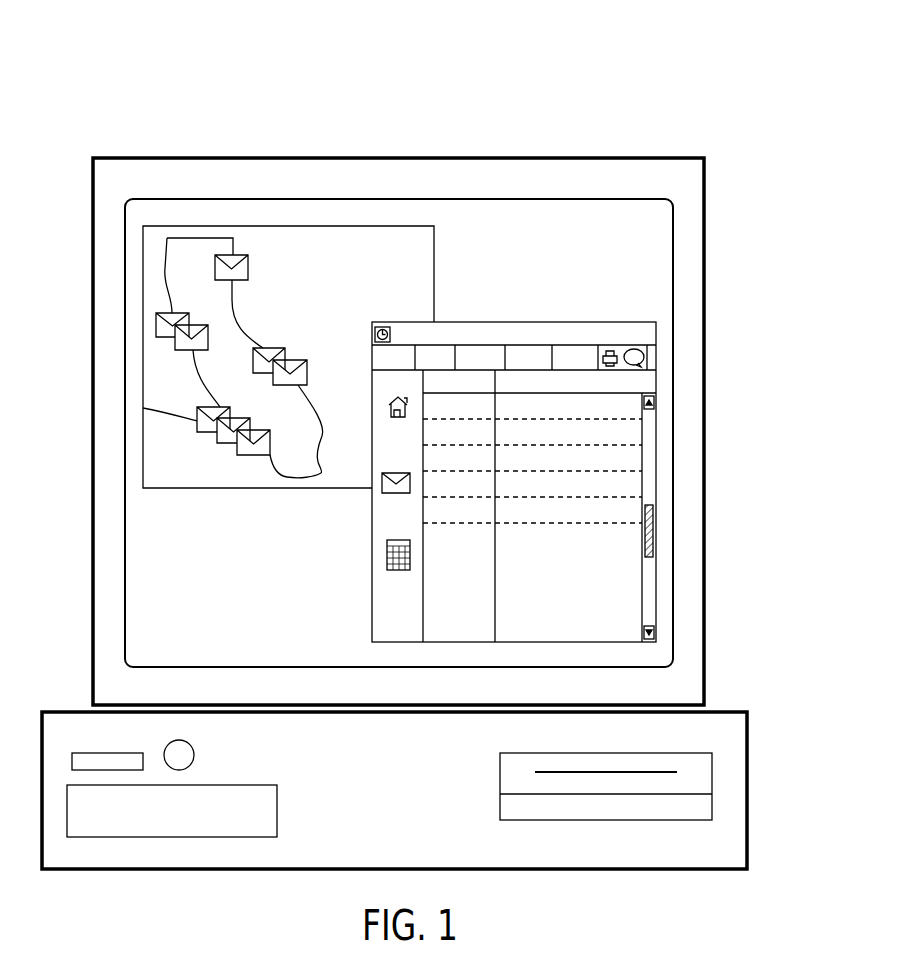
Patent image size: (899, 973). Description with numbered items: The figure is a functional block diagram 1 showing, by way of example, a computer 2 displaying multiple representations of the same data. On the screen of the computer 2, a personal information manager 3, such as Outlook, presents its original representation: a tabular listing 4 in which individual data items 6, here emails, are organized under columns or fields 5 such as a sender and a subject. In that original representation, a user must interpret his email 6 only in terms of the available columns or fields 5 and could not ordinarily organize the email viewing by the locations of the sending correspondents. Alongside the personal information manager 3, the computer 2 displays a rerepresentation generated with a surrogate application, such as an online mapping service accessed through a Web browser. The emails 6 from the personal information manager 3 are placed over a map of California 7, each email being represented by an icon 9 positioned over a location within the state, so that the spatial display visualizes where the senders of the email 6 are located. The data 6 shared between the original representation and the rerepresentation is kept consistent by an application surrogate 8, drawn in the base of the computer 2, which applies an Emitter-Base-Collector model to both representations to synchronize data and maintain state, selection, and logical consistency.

The functional block diagram 1 is at (105, 74).
The computer 2 is at (243, 139).
The personal information manager 3 is at (584, 322).
The tabular listings 4 is at (683, 385).
The columns or fields 5 is at (658, 383).
The individual data items 6 is at (626, 434).
The map of California 7 is at (294, 226).
The application surrogate 8 is at (147, 838).
The icon 9 is at (197, 421).